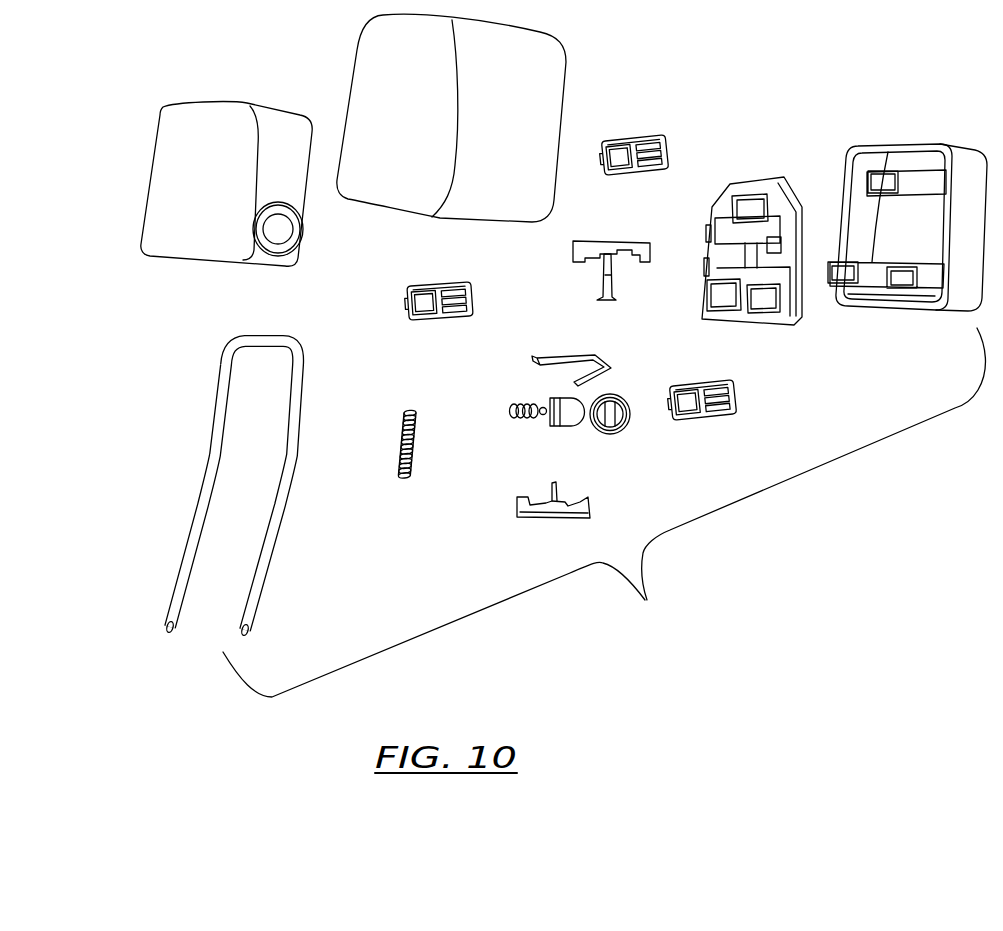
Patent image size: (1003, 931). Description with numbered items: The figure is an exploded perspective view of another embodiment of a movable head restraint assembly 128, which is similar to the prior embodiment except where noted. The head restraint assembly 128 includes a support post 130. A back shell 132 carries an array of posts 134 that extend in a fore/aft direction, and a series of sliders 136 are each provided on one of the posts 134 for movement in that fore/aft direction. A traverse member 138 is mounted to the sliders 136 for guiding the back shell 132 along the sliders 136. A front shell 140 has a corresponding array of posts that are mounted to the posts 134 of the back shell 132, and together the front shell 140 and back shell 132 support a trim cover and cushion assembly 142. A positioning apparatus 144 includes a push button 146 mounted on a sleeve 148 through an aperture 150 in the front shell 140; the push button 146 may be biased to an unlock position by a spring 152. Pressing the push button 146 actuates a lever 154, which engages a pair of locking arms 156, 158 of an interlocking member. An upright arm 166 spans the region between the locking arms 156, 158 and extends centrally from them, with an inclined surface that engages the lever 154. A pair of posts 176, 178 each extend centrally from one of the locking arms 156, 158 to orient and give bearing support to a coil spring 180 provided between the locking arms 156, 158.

The head restraint assembly 128 is at (604, 512).
The support post 130 is at (207, 451).
The back shell 132 is at (905, 298).
The array of posts 134 is at (872, 177).
The sliders 136 is at (655, 135).
The traverse member 138 is at (718, 195).
The front shell 140 is at (266, 218).
The trim cover and cushion assembly 142 is at (550, 72).
The positioning apparatus 144 is at (581, 400).
The push button 146 is at (562, 427).
The sleeve 148 is at (613, 417).
The aperture 150 is at (278, 229).
The spring 152 is at (513, 405).
The lever 154 is at (577, 358).
The locking arm 156 is at (602, 256).
The locking arm 158 is at (515, 504).
The upright arm 166 is at (612, 274).
The post 176 is at (602, 255).
The post 178 is at (554, 490).
The spring 180 is at (398, 440).